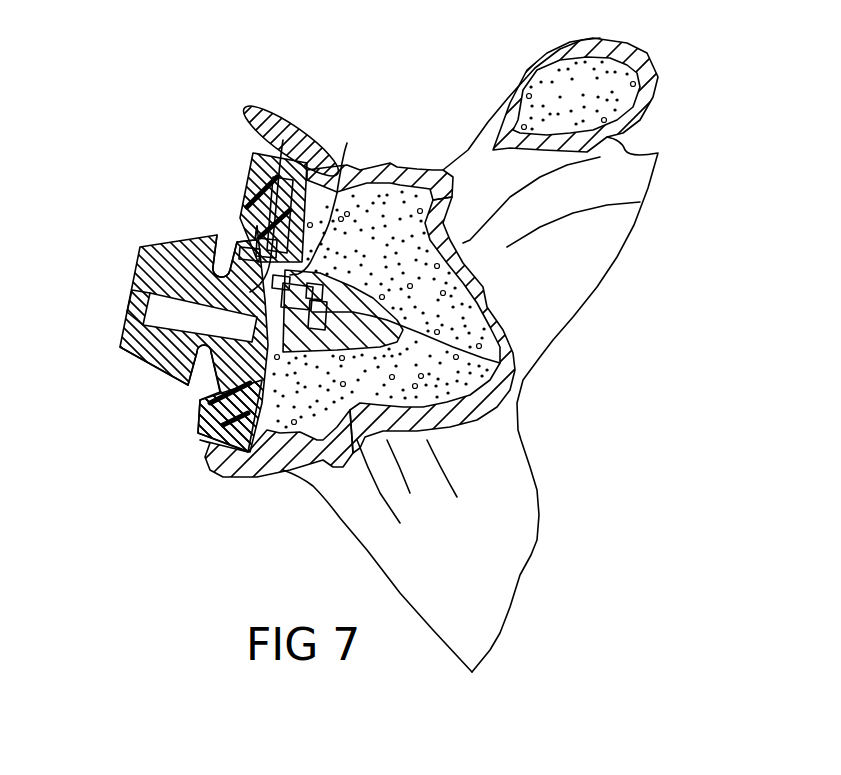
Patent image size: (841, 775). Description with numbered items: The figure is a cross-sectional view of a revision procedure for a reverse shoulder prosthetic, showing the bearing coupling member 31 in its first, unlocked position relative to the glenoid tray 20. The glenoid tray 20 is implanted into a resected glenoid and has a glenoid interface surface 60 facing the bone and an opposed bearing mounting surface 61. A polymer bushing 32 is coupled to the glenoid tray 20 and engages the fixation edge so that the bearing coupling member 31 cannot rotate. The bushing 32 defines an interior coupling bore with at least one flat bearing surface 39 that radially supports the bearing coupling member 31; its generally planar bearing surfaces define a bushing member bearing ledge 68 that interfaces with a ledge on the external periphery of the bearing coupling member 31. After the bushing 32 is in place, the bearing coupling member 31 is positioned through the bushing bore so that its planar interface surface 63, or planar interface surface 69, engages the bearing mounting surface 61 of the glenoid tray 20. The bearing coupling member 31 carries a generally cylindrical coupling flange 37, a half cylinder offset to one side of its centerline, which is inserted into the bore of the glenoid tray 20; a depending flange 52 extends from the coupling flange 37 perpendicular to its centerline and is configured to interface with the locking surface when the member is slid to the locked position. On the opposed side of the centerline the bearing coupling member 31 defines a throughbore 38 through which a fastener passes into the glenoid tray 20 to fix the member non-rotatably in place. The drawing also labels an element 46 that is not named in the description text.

The glenoid tray 20 is at (205, 435).
The bearing coupling member 31 is at (156, 365).
The bushing 32 is at (212, 398).
The coupling flange 37 is at (380, 403).
The throughbore 38 is at (160, 307).
The flat bearing surface 39 is at (175, 250).
The plate 46 is at (263, 163).
The depending flange 52 is at (497, 367).
The glenoid interface surface 60 is at (347, 143).
The bearing mounting surface 61 is at (255, 473).
The planar interface surface 63 is at (350, 173).
The bushing member bearing ledge 68 is at (242, 226).
The planar interface surface 69 is at (283, 140).